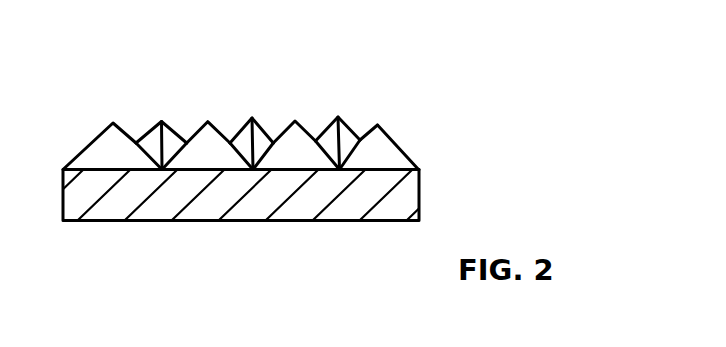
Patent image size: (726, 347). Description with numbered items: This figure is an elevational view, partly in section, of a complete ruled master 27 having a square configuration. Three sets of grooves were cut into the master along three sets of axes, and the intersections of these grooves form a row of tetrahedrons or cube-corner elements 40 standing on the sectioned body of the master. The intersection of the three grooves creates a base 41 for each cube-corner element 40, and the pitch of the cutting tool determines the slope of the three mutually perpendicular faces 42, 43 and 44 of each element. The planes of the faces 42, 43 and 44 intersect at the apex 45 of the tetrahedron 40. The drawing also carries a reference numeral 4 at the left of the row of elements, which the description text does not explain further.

The ruled master 27 is at (425, 38).
The retroreflective element 4 is at (103, 149).
The cube-corner element 40 is at (402, 143).
The base 41 is at (390, 168).
The face 42 is at (395, 132).
The face 43 is at (196, 137).
The face 44 is at (366, 136).
The apex 45 is at (252, 116).